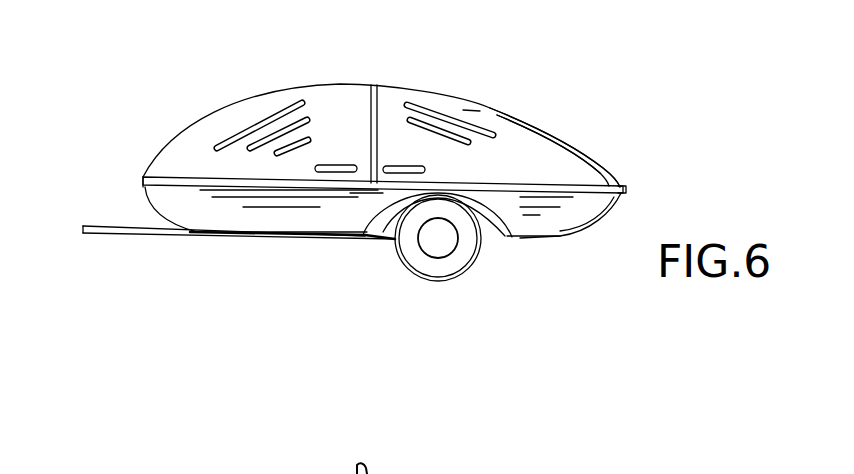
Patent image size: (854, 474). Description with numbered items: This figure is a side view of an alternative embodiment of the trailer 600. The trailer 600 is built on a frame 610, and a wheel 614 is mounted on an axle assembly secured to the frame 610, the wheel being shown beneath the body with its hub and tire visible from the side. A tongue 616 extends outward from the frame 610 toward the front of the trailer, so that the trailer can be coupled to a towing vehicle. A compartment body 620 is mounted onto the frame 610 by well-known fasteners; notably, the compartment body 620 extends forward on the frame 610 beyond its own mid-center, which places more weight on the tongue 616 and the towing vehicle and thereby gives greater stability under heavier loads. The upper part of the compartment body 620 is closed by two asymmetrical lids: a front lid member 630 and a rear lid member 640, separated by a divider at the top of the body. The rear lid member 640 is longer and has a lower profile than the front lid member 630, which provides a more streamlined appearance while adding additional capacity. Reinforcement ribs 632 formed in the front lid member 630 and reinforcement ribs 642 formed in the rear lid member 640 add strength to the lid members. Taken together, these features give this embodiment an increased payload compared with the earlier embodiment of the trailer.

The trailer 600 is at (150, 92).
The frame 610 is at (280, 238).
The wheel 614 is at (478, 262).
The tongue 616 is at (130, 237).
The compartment body 620 is at (612, 198).
The front lid member 630 is at (327, 83).
The reinforcement ribs 632 is at (263, 132).
The rear lid member 640 is at (428, 88).
The reinforcement ribs 642 is at (492, 111).